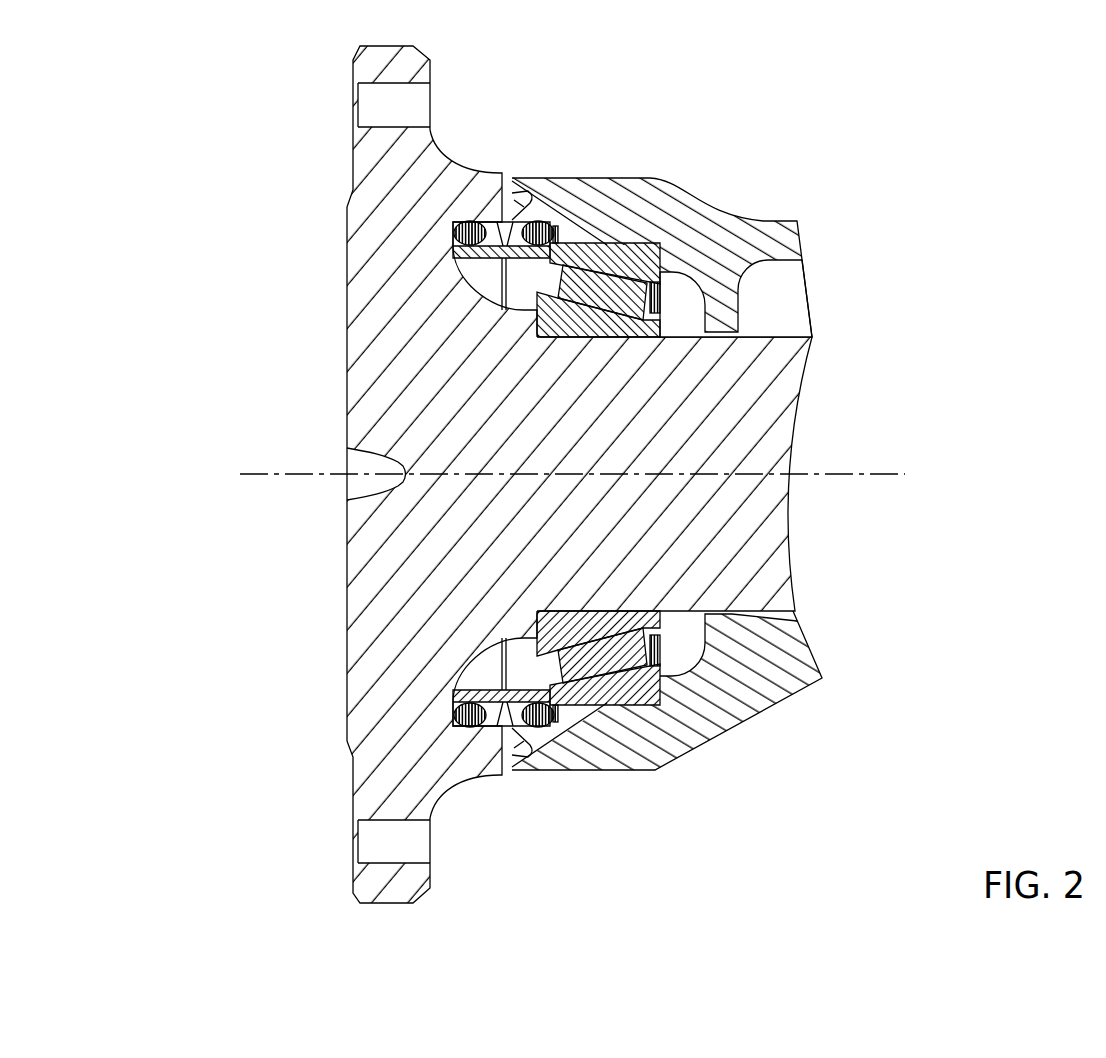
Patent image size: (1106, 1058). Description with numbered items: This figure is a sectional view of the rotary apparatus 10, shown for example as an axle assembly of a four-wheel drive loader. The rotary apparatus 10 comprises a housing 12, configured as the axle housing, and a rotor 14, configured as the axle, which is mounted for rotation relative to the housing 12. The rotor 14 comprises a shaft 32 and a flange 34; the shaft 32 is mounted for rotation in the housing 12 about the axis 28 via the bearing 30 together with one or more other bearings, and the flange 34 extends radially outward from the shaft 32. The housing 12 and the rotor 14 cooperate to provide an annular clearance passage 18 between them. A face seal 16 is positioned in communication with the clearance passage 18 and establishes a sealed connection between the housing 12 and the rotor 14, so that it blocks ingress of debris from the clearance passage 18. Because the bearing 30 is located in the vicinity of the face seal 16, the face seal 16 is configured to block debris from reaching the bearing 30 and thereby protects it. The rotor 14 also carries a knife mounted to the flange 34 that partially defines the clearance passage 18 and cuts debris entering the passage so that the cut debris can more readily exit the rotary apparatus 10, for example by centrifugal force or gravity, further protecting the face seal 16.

The rotary apparatus 10 is at (584, 471).
The housing 12 is at (708, 191).
The rotor 14 is at (312, 279).
The face seal 16 is at (488, 272).
The annular clearance passage 18 is at (507, 178).
The axis 28 is at (839, 473).
The bearing 30 is at (648, 250).
The shaft 32 is at (753, 377).
The flange 34 is at (407, 68).